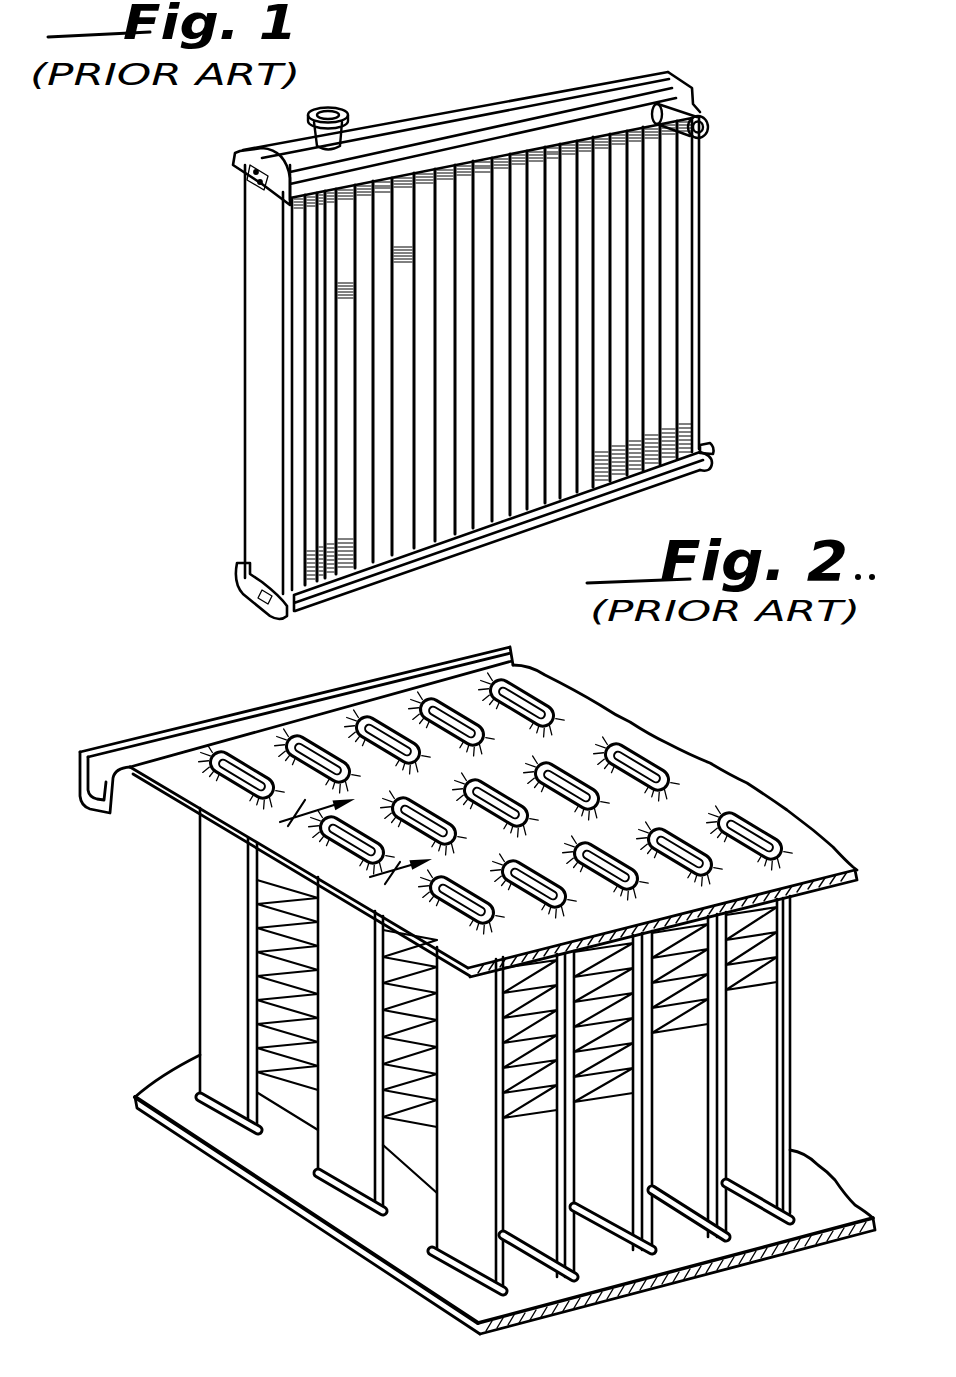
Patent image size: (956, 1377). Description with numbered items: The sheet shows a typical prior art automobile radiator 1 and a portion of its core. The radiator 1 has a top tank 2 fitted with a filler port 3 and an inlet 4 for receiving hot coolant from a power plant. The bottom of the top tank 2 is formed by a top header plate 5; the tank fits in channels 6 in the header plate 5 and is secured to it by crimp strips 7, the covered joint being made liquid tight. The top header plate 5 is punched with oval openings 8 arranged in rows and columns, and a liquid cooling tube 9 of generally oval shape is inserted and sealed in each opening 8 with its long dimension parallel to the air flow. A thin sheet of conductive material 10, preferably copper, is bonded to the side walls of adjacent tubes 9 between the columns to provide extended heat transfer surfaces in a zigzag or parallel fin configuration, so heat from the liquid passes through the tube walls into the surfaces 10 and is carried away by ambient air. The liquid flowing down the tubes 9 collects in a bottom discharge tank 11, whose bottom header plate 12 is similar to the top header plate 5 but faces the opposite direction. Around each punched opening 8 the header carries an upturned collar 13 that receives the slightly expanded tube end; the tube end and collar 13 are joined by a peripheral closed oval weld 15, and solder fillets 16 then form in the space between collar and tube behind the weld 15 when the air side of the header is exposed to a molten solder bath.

In FIG. 1, the automobile radiator 1 is at (535, 92).
In FIG. 1, the top tank 2 is at (692, 88).
In FIG. 1, the filler port 3 is at (347, 114).
In FIG. 2, the filler port 3 is at (371, 831).
In FIG. 1, the inlet 4 is at (710, 130).
In FIG. 2, the top header plate 5 is at (567, 706).
In FIG. 2, the channel 6 is at (210, 735).
In FIG. 1, the crimp strip 7 is at (238, 153).
In FIG. 2, the oval opening 8 is at (757, 833).
In FIG. 2, the liquid cooling tube 9 is at (790, 955).
In FIG. 2, the thin sheet of conductive material 10 is at (748, 1007).
In FIG. 1, the bottom discharge tank 11 is at (278, 614).
In FIG. 1, the bottom header plate 12 is at (240, 583).
In FIG. 2, the bottom header plate 12 is at (219, 1132).
In FIG. 2, the upturned collar 13 is at (228, 774).
In FIG. 2, the peripheral closed oval weld 15 is at (645, 760).
In FIG. 2, the solder fillet 16 is at (432, 1253).